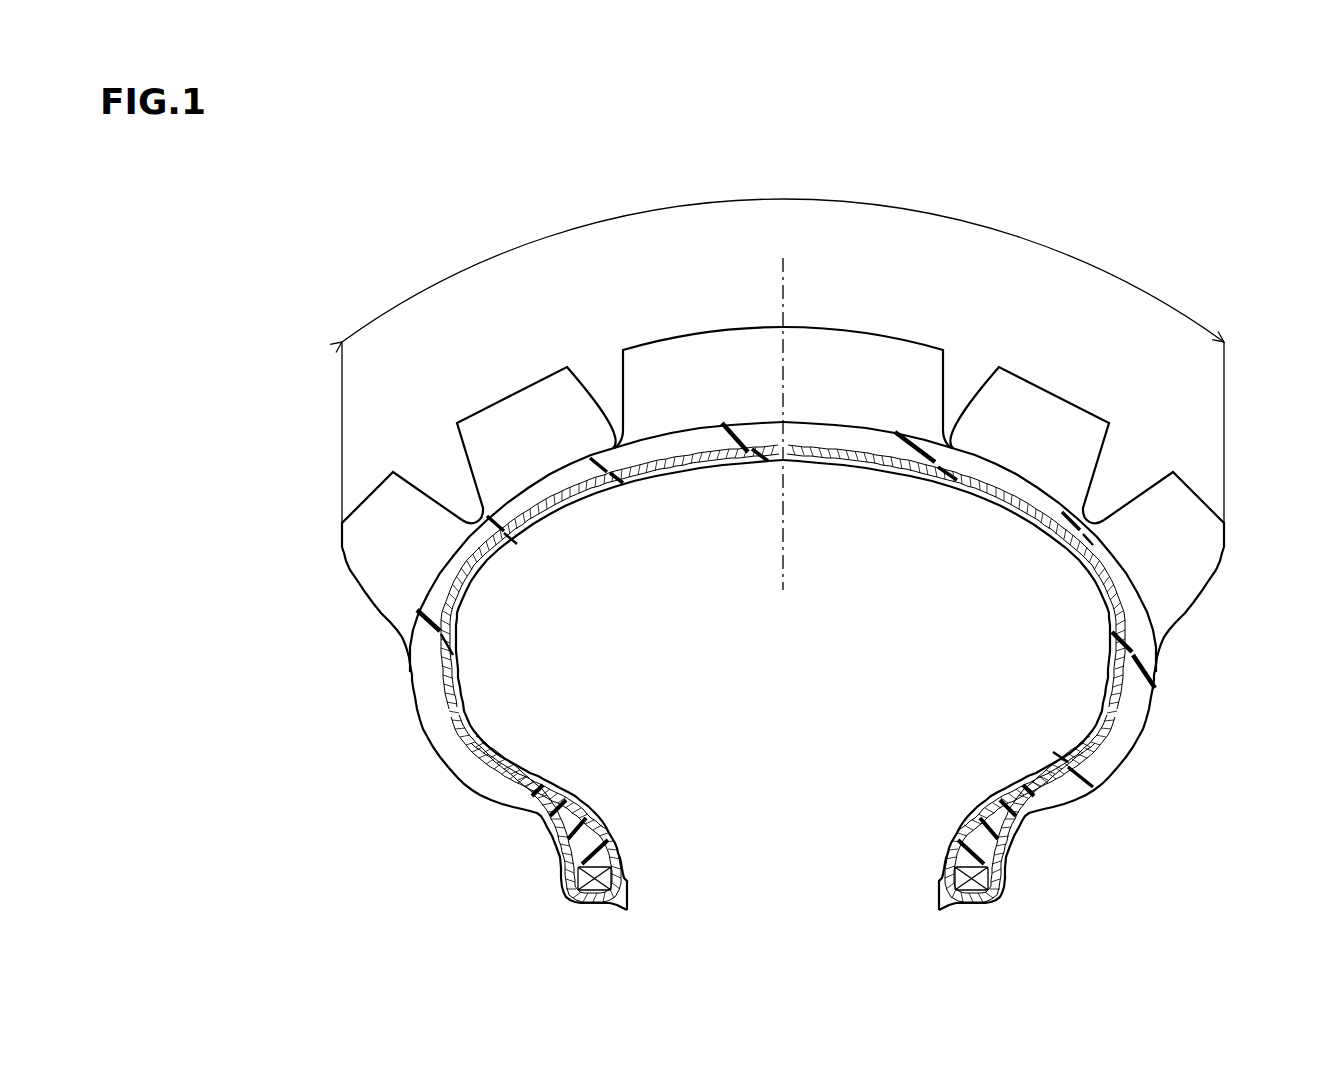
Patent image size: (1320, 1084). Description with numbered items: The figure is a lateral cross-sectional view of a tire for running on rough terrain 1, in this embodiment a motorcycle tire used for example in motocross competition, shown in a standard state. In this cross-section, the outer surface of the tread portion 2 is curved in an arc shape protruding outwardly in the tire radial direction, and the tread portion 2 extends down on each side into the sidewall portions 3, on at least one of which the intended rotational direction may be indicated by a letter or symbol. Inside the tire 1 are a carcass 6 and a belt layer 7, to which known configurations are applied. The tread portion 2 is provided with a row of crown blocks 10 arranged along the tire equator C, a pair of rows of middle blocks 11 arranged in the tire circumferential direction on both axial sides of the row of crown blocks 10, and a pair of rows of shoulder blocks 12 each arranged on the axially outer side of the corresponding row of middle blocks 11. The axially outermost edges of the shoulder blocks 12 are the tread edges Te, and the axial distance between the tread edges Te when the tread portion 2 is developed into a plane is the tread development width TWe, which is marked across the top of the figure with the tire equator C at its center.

The tire for running on rough terrain 1 is at (899, 324).
The tread portion 2 is at (829, 318).
The sidewall portion 3 is at (410, 737).
The carcass 6 is at (711, 452).
The belt layer 7 is at (853, 450).
The crown block 10 is at (705, 380).
The middle block 11 is at (529, 438).
The shoulder block 12 is at (396, 520).
The tread development width TWe is at (783, 343).
The tread edge Te is at (1226, 521).
The tire equator C is at (783, 408).